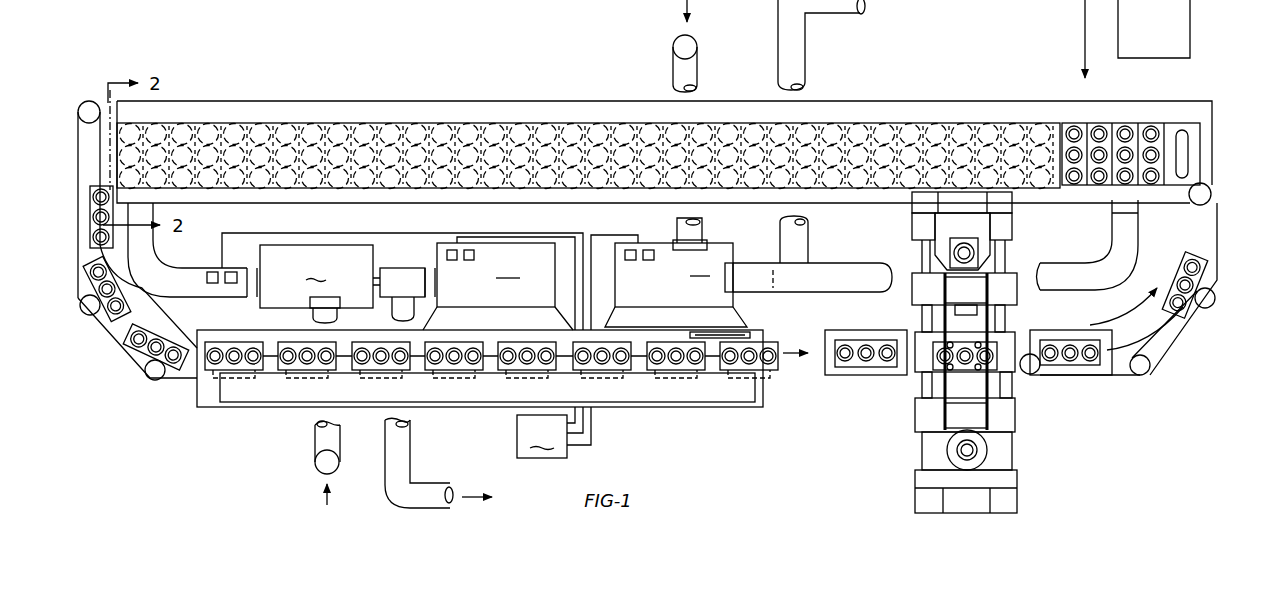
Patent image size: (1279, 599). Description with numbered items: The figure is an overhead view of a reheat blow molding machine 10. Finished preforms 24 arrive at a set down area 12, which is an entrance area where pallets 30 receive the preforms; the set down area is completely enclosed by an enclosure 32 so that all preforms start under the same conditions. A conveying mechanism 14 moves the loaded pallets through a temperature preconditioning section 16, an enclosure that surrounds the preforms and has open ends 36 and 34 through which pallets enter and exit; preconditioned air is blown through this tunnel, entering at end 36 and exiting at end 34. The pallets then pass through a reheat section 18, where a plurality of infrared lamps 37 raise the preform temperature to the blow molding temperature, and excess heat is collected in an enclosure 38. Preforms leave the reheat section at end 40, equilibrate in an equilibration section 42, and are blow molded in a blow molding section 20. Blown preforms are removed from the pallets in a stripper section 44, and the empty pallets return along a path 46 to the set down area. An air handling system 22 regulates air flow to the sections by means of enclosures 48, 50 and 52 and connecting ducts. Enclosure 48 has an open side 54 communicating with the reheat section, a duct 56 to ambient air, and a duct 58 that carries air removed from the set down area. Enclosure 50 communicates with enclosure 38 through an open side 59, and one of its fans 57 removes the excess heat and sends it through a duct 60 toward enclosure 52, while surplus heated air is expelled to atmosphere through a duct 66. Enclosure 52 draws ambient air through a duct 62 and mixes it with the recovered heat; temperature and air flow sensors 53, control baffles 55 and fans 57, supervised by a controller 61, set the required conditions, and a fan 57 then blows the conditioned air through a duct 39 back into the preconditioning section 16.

The reheat blow molding machine 10 is at (475, 66).
The set down area 12 is at (1178, 103).
The conveying mechanism 14 is at (815, 120).
The preconditioning section 16 is at (310, 101).
The reheat section 18 is at (477, 397).
The blow molding section 20 is at (1018, 505).
The air handling system 22 is at (452, 222).
The preforms 24 is at (1082, 123).
The pallets 30 is at (1215, 292).
The enclosure 32 is at (1213, 112).
The end 34 is at (1215, 165).
The end 36 is at (106, 101).
The infrared lamps 37 is at (487, 372).
The enclosure 38 is at (618, 405).
The duct 39 is at (145, 290).
The end 40 is at (763, 393).
The equilibration section 42 is at (840, 378).
The stripper section 44 is at (1078, 376).
The path 46 is at (1185, 333).
The enclosure 48 is at (676, 285).
The enclosure 50 is at (498, 286).
The enclosure 52 is at (320, 284).
The temperature and air flow sensors 53 is at (207, 268).
The open side 54 is at (712, 332).
The control baffles 55 is at (192, 272).
The duct 56 is at (697, 68).
The fans 57 is at (247, 283).
The duct 58 is at (836, 263).
The open side 59 is at (522, 330).
The duct 60 is at (393, 268).
The controller 61 is at (554, 432).
The duct 62 is at (318, 441).
The duct 66 is at (395, 506).